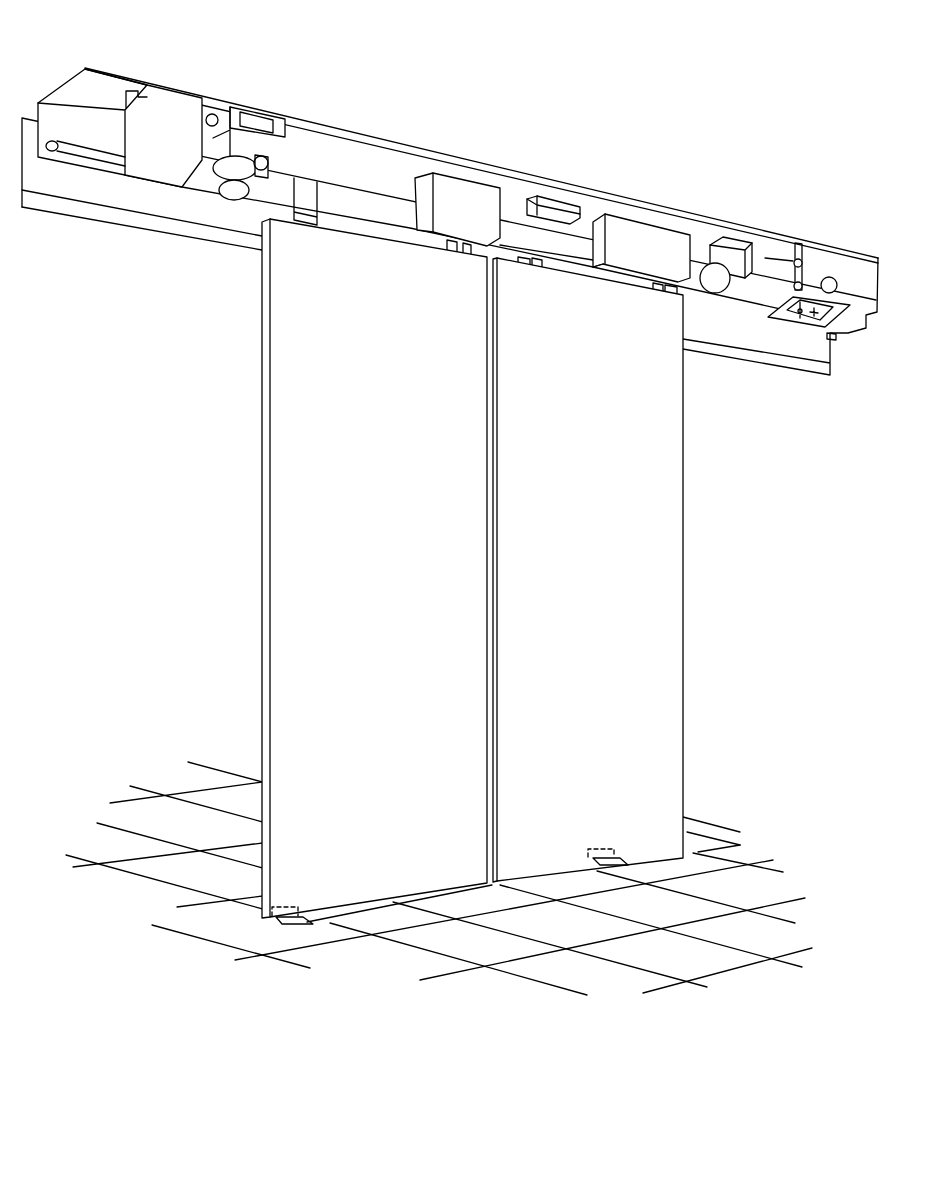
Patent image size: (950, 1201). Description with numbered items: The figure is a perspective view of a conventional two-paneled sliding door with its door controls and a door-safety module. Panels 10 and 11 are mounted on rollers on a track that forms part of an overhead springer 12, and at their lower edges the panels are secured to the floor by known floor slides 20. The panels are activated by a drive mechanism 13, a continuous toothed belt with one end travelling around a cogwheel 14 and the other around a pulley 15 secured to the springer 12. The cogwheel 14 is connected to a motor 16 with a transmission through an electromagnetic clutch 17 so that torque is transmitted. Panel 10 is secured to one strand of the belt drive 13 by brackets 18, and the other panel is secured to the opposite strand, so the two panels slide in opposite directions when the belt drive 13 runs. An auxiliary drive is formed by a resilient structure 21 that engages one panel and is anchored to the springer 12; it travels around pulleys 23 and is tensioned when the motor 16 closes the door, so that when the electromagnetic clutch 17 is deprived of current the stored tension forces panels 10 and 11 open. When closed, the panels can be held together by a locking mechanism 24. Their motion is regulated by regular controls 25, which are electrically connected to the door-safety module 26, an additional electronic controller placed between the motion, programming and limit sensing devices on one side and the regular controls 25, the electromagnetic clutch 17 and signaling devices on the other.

The panel 10 is at (392, 589).
The panel 11 is at (615, 589).
The springer 12 is at (72, 96).
The drive mechanism 13 is at (350, 192).
The cogwheel 14 is at (223, 197).
The pulley 15 is at (722, 287).
The motor 16 is at (240, 170).
The electromagnetic clutch 17 is at (284, 140).
The brackets 18 is at (305, 188).
The floor slides 20 is at (300, 924).
The resilient structure 21 is at (782, 258).
The pulleys 23 is at (830, 277).
The locking mechanism 24 is at (547, 198).
The regular controls 25 is at (625, 232).
The door-safety module 26 is at (448, 188).